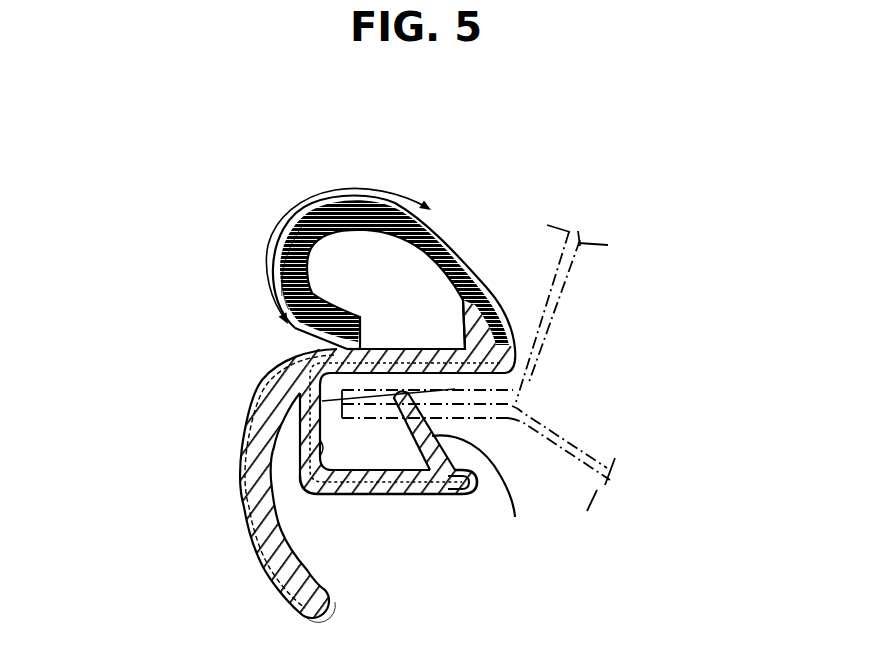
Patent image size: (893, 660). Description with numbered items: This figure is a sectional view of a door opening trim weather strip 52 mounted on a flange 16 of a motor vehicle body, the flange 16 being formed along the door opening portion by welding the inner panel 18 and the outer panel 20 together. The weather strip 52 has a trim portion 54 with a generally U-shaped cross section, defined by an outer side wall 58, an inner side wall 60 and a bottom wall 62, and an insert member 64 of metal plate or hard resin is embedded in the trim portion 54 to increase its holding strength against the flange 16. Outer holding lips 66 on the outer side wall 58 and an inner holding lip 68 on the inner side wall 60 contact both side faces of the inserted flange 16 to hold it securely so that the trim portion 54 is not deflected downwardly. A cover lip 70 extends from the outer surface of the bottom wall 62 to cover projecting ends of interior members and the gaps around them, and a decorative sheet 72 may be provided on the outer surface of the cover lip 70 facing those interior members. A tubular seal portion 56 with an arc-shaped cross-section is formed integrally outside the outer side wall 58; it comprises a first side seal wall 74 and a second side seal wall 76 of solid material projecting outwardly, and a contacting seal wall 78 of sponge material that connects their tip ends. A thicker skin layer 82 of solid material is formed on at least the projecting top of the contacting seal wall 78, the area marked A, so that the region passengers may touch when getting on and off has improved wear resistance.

The flange 16 is at (370, 407).
The inner panel 18 is at (556, 431).
The outer panel 20 is at (553, 327).
The door opening trim weather strip 52 is at (258, 224).
The trim portion 54 is at (412, 495).
The tubular seal portion 56 is at (284, 263).
The outer side wall 58 is at (397, 349).
The inner side wall 60 is at (437, 495).
The bottom wall 62 is at (360, 495).
The insert member 64 is at (322, 448).
The outer holding lips 66 is at (322, 372).
The inner holding lip 68 is at (515, 517).
The cover lip 70 is at (251, 538).
The decorative sheet 72 is at (272, 583).
The first side seal wall 74 is at (487, 293).
The second side seal wall 76 is at (292, 298).
The contacting seal wall 78 is at (323, 201).
The skin layer 82 is at (387, 198).